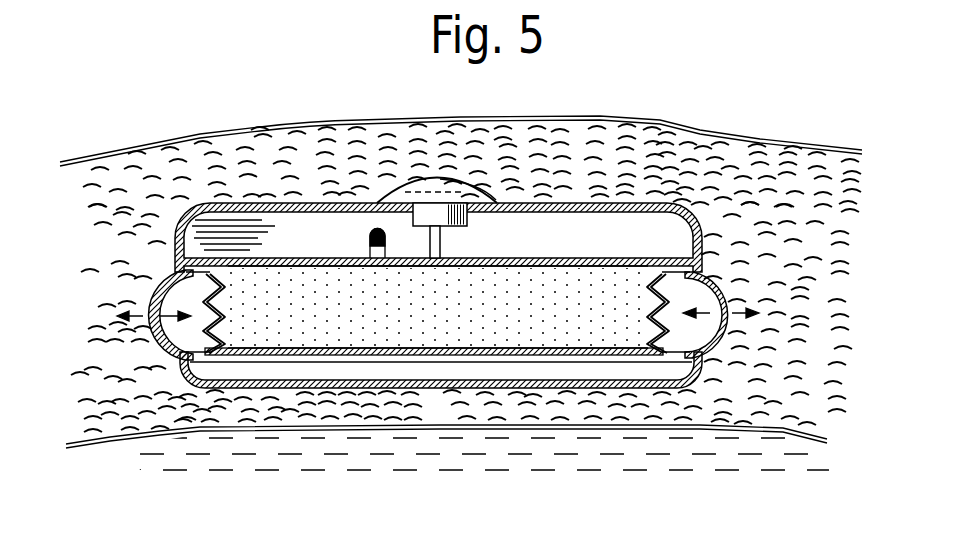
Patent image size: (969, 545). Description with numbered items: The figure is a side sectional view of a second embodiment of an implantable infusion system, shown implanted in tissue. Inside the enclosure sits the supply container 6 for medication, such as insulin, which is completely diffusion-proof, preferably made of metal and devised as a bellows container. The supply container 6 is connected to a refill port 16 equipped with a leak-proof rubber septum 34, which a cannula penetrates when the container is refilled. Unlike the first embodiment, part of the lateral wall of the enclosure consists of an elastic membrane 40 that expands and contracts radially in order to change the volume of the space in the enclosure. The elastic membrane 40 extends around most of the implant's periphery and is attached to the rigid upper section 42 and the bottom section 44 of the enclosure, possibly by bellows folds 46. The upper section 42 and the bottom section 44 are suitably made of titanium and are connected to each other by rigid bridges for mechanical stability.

The supply container 6 is at (312, 316).
The refill port 16 is at (405, 200).
The septum 34 is at (455, 182).
The elastic membrane 40 is at (160, 297).
The rigid upper section 42 is at (573, 202).
The bottom section 44 is at (430, 388).
The bellows folds 46 is at (172, 278).